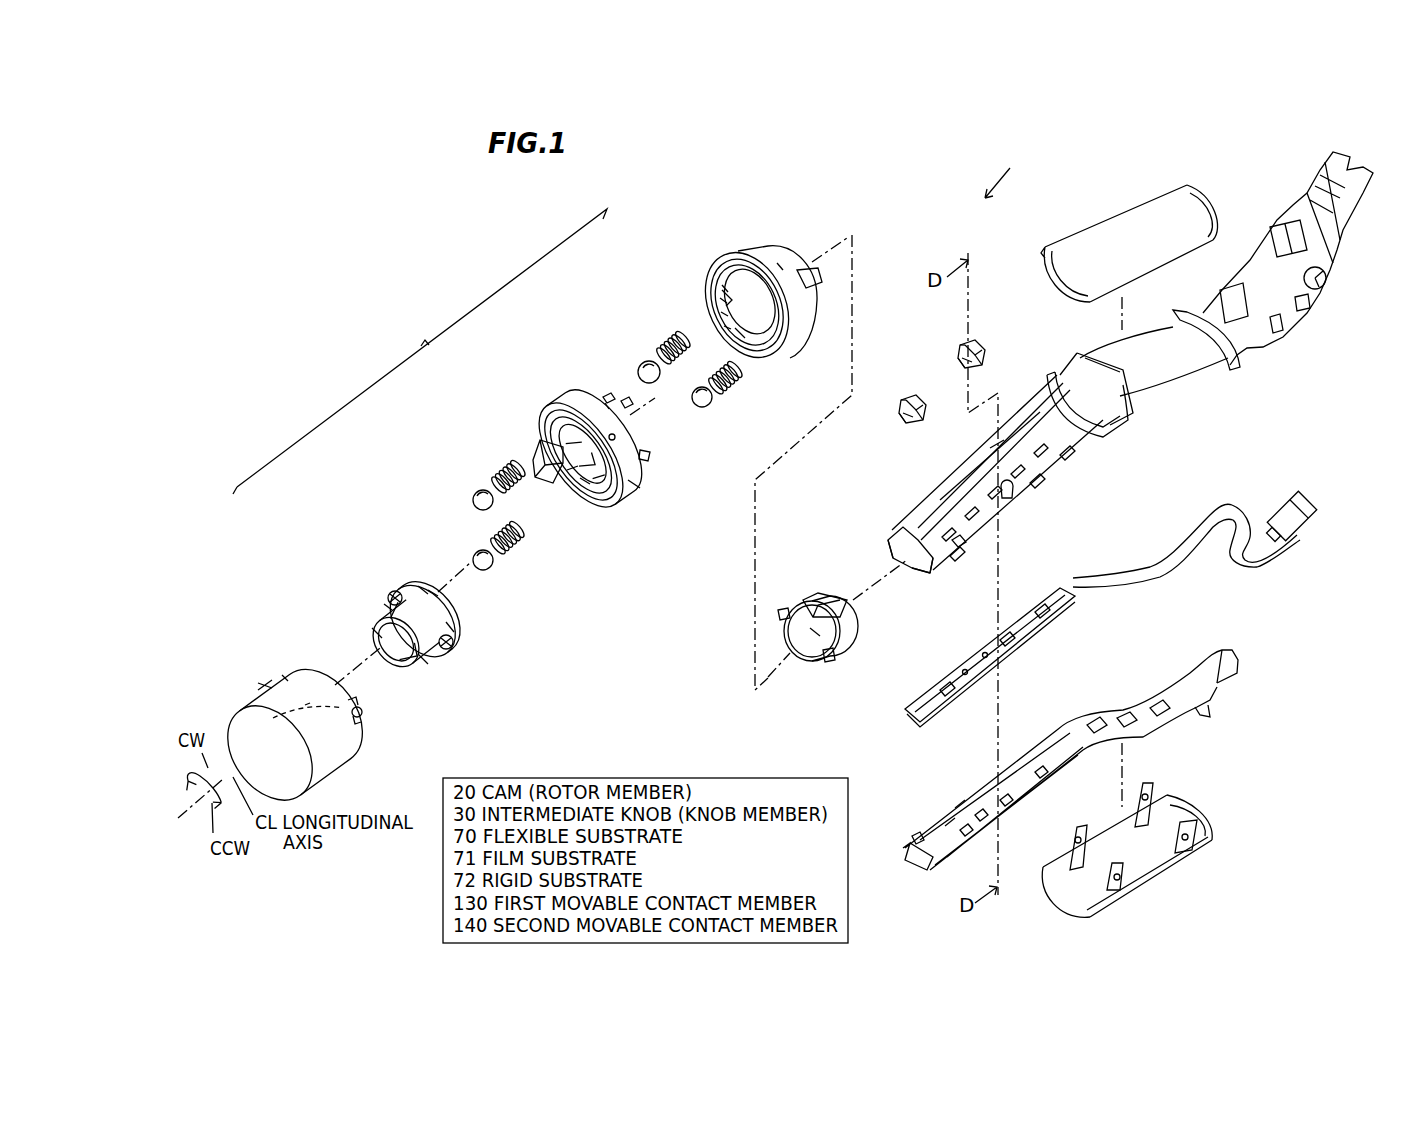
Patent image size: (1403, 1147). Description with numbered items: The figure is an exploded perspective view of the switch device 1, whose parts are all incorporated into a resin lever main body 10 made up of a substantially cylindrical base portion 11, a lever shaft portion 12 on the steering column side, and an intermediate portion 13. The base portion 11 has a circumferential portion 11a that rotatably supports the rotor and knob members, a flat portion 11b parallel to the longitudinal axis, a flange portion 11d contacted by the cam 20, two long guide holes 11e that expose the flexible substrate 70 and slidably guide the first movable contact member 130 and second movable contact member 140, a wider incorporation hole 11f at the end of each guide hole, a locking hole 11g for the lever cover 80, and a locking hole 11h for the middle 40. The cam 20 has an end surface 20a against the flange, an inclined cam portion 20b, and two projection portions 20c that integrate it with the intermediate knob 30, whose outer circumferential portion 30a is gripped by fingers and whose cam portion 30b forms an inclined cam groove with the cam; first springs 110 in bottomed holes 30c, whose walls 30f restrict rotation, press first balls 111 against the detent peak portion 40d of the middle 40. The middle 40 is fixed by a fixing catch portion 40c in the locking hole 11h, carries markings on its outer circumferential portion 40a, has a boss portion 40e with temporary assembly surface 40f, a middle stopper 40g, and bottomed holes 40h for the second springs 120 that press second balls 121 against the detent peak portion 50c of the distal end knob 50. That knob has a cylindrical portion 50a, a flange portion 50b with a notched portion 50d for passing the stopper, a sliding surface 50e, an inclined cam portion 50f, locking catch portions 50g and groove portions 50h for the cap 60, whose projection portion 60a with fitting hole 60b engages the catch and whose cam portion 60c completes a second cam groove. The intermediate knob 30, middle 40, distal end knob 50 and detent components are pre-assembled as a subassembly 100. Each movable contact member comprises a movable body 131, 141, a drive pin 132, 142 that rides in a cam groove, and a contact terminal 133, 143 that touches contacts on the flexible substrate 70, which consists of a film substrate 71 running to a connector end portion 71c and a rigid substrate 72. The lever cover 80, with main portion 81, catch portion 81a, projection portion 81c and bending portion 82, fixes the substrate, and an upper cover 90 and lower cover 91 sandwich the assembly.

The switch device 1 is at (1075, 172).
The lever main body 10 is at (1108, 386).
The base portion 11 is at (904, 585).
The circumferential portion 11a is at (943, 552).
The flat portion 11b is at (907, 523).
The flange portion 11d is at (1110, 420).
The long guide hole 11e is at (1040, 410).
The incorporation hole 11f is at (997, 445).
The locking hole 11g is at (957, 542).
The locking hole 11h is at (1003, 490).
The lever shaft portion 12 is at (1253, 260).
The intermediate portion 13 is at (1150, 350).
The cam 20 is at (811, 596).
The end surface 20a is at (835, 600).
The cam portion 20b is at (800, 657).
The projection portion 20c is at (781, 608).
The intermediate knob 30 is at (733, 257).
The outer circumferential portion 30a is at (767, 260).
The cam portion 30b is at (805, 265).
The bottomed holes 30c is at (727, 297).
The walls 30f is at (740, 333).
The middle 40 is at (563, 410).
The outer circumferential portion 40a is at (633, 483).
The fixing catch portion 40c is at (583, 480).
The detent peak portion 40d is at (645, 437).
The boss portion 40e is at (625, 401).
The temporary assembly surface 40f is at (605, 397).
The middle stopper 40g is at (545, 447).
The bottomed holes 40h is at (572, 473).
The distal end knob 50 is at (403, 583).
The cylindrical portion 50a is at (423, 660).
The flange portion 50b is at (450, 627).
The detent peak portion 50c is at (423, 587).
The notched portion 50d is at (432, 590).
The sliding surface 50e is at (391, 592).
The cam portion 50f is at (377, 630).
The locking catch portion 50g is at (448, 650).
The groove portion 50h is at (388, 603).
The cap 60 is at (293, 670).
The projection portion 60a is at (361, 714).
The fitting hole 60b is at (357, 703).
The cam portion 60c is at (310, 705).
The flexible substrate 70 is at (1112, 590).
The film substrate 71 is at (1115, 577).
The connector end portion 71c is at (1298, 502).
The rigid substrate 72 is at (970, 652).
The lever cover 80 is at (1029, 760).
The main portion 81 is at (960, 807).
The catch portion 81a is at (896, 824).
The projection portion 81c is at (950, 823).
The bending portion 82 is at (1165, 722).
The upper cover 90 is at (1187, 185).
The lower cover 91 is at (1157, 873).
The subassembly 100 is at (542, 449).
The first springs 110 is at (730, 362).
The first balls 111 is at (696, 391).
The second springs 120 is at (506, 526).
The second balls 121 is at (477, 550).
The first movable contact member 130 is at (993, 347).
The movable body 131 is at (985, 357).
The drive pin 132 is at (962, 347).
The contact terminal 133 is at (962, 365).
The second movable contact member 140 is at (904, 433).
The movable body 141 is at (925, 412).
The drive pin 142 is at (903, 393).
The contact terminal 143 is at (902, 418).